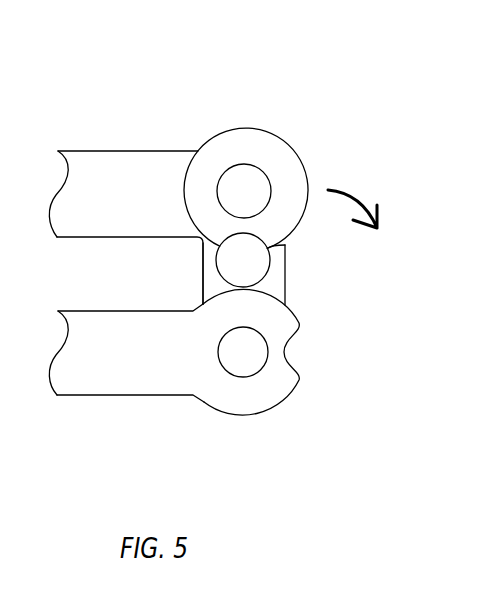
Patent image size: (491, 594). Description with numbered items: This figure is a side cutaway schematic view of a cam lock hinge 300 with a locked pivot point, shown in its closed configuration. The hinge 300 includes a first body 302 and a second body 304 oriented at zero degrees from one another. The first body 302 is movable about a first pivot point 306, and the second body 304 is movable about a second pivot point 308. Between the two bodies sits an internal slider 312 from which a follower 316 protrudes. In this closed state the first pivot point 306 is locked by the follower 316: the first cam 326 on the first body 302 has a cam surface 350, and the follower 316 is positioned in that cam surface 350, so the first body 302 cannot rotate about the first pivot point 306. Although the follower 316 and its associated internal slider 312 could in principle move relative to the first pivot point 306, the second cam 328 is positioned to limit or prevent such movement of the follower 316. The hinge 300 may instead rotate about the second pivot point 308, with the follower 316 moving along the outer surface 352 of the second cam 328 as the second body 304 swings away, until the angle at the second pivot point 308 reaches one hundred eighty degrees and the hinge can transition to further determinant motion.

The hinge 300 is at (304, 68).
The first body 302 is at (155, 182).
The second body 304 is at (137, 382).
The first pivot point 306 is at (243, 190).
The second pivot point 308 is at (242, 366).
The internal slider 312 is at (277, 277).
The follower 316 is at (245, 263).
The first cam 326 is at (280, 171).
The second cam 328 is at (282, 387).
The cam surface 350 is at (211, 224).
The outer surface 352 is at (198, 294).